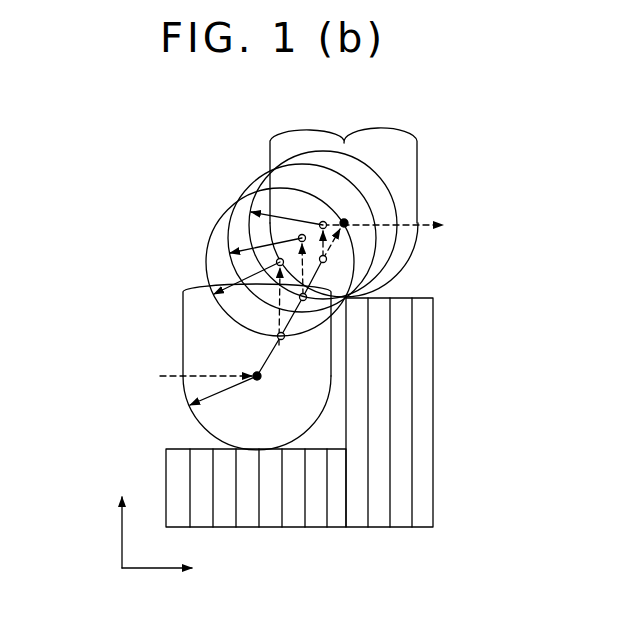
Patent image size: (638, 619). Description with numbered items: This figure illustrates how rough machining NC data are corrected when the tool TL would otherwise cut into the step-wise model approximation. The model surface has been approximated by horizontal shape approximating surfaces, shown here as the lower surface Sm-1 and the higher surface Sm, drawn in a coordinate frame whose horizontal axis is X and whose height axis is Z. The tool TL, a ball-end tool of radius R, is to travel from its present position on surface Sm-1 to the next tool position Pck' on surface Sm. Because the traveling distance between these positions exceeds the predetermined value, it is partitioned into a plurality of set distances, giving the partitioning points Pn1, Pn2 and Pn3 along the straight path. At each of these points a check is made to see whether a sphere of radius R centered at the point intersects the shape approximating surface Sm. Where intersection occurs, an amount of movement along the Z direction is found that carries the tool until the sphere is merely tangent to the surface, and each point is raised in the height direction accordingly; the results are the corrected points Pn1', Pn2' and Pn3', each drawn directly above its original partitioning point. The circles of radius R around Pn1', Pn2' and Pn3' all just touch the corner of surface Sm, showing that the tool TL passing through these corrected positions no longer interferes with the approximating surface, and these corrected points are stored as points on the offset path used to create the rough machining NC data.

The tool TL is at (418, 176).
The next tool position Pck' is at (383, 162).
The first partitioning point Pn1 is at (290, 338).
The second partitioning point Pn2 is at (391, 297).
The third partitioning point Pn3 is at (395, 262).
The corrected first partitioning point Pn1' is at (252, 262).
The corrected second partitioning point Pn2' is at (272, 238).
The corrected third partitioning point Pn3' is at (323, 198).
The shape approximating surface Sm is at (423, 298).
The preceding shape approximating surface Sm-1 is at (178, 449).
The tool radius R is at (256, 309).
The Z direction Z is at (120, 518).
The X direction X is at (168, 570).